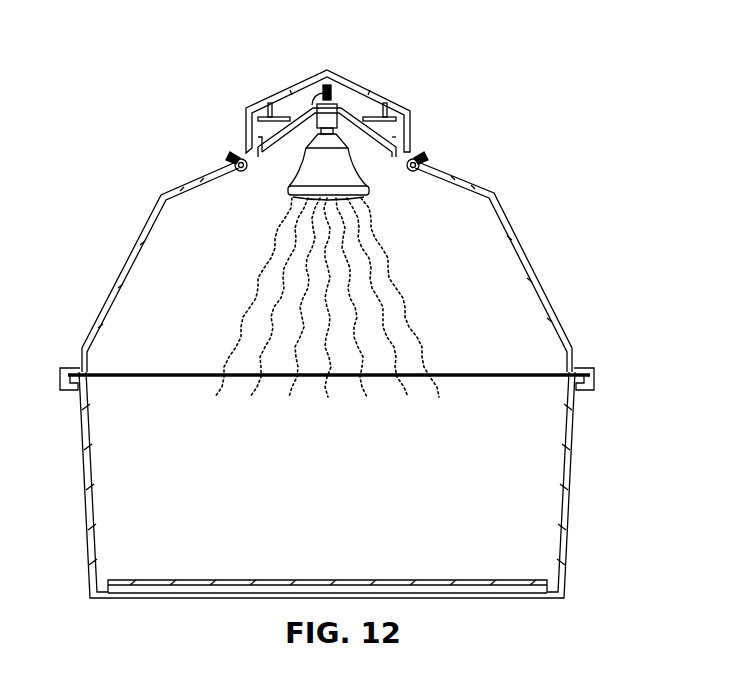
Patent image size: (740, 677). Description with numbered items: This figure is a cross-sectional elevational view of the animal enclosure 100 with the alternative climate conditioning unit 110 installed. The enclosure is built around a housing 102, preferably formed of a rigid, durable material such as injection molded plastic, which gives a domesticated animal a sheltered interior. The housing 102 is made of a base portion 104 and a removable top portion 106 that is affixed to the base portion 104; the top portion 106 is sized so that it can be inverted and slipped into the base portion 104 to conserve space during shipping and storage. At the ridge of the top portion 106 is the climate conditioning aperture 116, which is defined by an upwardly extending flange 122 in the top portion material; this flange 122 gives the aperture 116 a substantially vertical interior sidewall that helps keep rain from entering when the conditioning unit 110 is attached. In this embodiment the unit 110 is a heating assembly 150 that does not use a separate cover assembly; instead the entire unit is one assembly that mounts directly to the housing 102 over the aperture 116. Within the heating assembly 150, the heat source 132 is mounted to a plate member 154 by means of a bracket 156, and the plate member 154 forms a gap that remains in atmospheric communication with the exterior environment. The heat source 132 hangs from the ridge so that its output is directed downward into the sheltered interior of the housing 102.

The plant growing apparatus 100 is at (110, 92).
The housing 102 is at (155, 191).
The base portion 104 is at (568, 476).
The top portion 106 is at (548, 296).
The climate conditioning unit 110 is at (393, 55).
The climate conditioning aperture 116 is at (277, 151).
The upwardly extending flange 122 is at (416, 124).
The heat source 132 is at (374, 199).
The heating assembly 150 is at (324, 58).
The plate member 154 is at (398, 96).
The bracket 156 is at (290, 98).